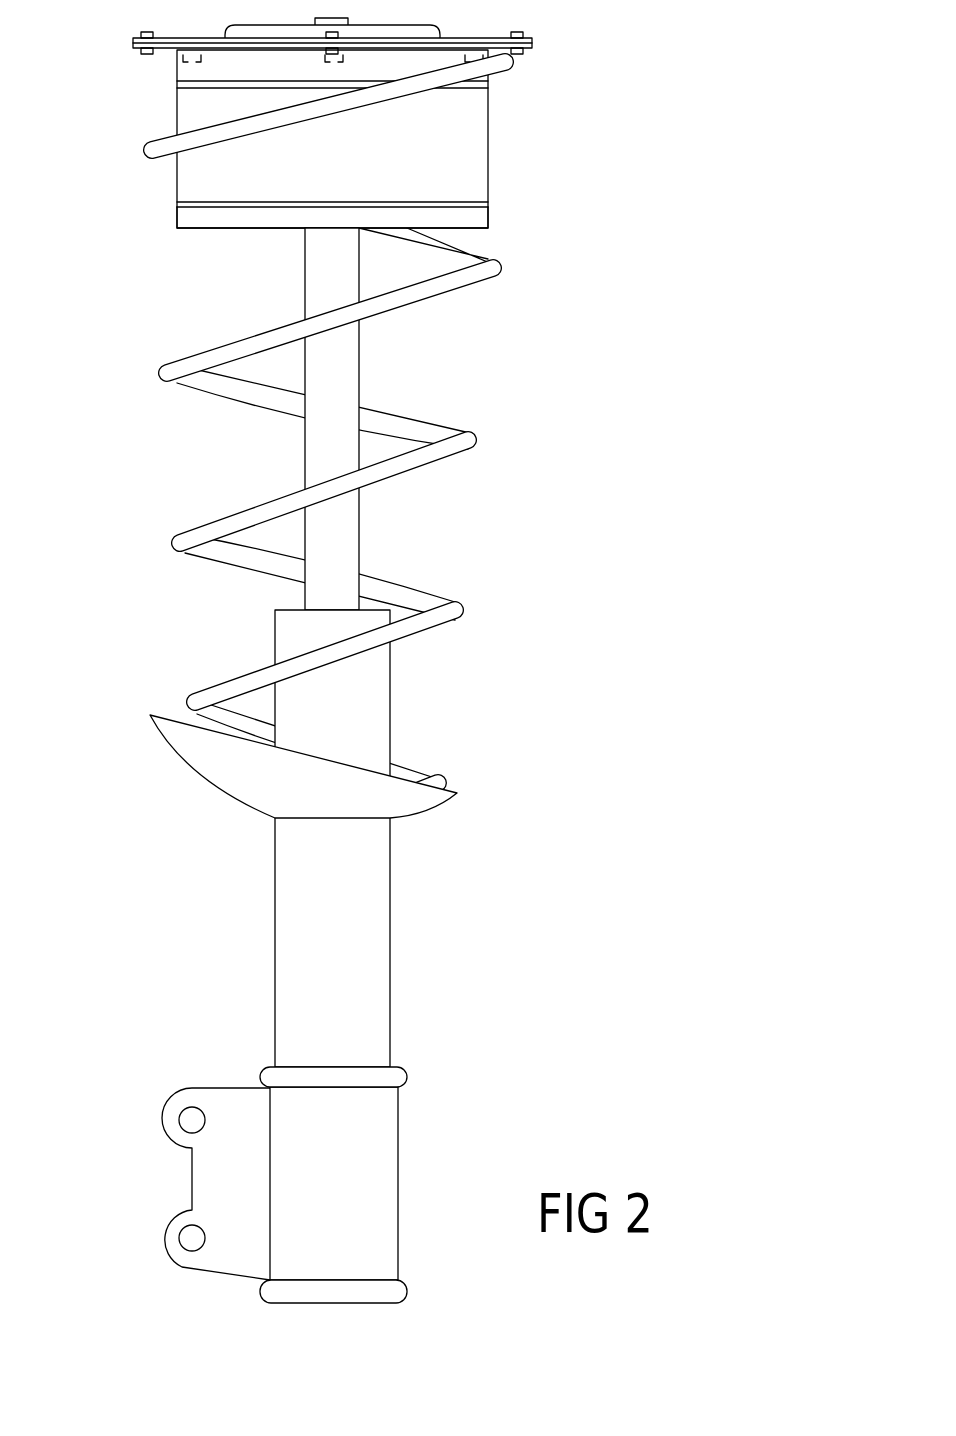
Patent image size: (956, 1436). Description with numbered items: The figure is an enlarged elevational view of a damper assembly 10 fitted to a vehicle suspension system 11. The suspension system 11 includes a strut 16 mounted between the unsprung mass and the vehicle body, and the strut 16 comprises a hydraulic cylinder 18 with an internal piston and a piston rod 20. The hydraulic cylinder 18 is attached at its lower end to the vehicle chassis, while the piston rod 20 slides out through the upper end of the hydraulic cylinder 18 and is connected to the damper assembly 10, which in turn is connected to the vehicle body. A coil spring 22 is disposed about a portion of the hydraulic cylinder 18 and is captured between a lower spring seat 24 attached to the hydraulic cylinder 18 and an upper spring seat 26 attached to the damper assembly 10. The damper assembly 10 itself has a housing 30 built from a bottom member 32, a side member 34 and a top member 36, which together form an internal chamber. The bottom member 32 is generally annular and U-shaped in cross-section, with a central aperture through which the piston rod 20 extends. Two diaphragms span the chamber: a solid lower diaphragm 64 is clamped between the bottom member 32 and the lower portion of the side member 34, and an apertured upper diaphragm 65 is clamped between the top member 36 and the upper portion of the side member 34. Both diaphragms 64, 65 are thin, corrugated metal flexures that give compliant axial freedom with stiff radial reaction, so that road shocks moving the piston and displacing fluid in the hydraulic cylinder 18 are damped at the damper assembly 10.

The damper assembly 10 is at (588, 100).
The suspension system 11 is at (410, 945).
The strut 16 is at (262, 995).
The hydraulic cylinder 18 is at (378, 890).
The piston rod 20 is at (348, 553).
The coil spring 22 is at (465, 441).
The lower spring seat 24 is at (236, 775).
The upper spring seat 26 is at (532, 45).
The housing 30 is at (162, 185).
The bottom member 32 is at (465, 218).
The side member 34 is at (482, 148).
The top member 36 is at (190, 72).
The lower diaphragm 64 is at (482, 205).
The upper diaphragm 65 is at (488, 82).